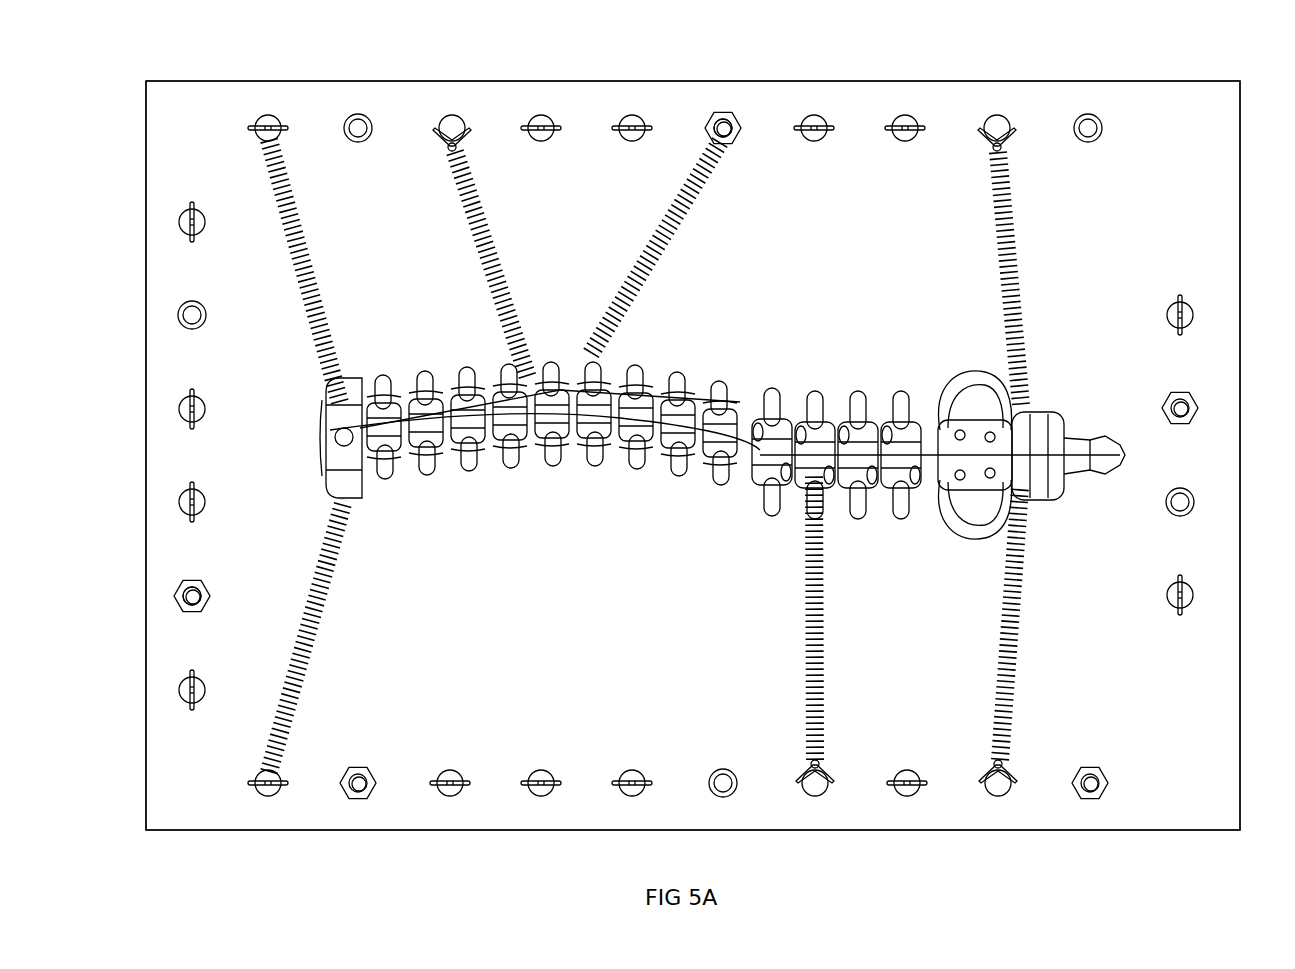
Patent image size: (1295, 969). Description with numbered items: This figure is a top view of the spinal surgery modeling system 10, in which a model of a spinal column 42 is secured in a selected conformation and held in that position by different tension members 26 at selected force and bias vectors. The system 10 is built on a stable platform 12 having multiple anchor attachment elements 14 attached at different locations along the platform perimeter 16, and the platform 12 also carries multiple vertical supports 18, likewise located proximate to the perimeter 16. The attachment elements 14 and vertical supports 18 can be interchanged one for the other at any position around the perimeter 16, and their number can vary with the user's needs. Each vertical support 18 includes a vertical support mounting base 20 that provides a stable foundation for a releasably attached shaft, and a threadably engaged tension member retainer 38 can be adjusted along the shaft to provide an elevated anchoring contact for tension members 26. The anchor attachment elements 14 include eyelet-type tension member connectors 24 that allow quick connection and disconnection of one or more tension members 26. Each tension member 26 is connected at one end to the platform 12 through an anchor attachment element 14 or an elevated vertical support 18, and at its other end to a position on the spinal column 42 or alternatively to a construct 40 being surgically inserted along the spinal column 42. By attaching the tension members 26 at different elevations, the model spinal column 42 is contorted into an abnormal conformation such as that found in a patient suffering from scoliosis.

The spinal surgery modeling system 10 is at (1085, 72).
The platform 12 is at (1176, 210).
The anchor attachment element 14 is at (206, 403).
The platform perimeter 16 is at (186, 110).
The vertical support 18 is at (723, 126).
The vertical support mounting base 20 is at (358, 146).
The tension member connector 24 is at (465, 140).
The tension member 26 is at (345, 322).
The tension member retainer 38 is at (738, 124).
The construct 40 is at (790, 490).
The spinal column 42 is at (465, 462).